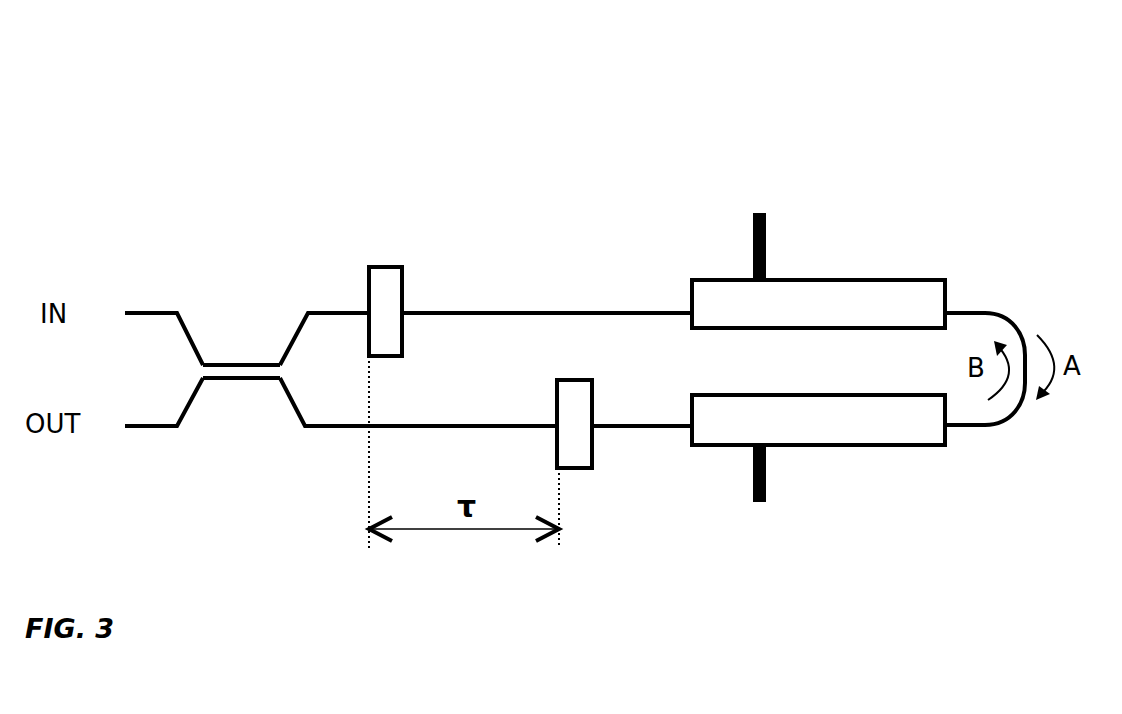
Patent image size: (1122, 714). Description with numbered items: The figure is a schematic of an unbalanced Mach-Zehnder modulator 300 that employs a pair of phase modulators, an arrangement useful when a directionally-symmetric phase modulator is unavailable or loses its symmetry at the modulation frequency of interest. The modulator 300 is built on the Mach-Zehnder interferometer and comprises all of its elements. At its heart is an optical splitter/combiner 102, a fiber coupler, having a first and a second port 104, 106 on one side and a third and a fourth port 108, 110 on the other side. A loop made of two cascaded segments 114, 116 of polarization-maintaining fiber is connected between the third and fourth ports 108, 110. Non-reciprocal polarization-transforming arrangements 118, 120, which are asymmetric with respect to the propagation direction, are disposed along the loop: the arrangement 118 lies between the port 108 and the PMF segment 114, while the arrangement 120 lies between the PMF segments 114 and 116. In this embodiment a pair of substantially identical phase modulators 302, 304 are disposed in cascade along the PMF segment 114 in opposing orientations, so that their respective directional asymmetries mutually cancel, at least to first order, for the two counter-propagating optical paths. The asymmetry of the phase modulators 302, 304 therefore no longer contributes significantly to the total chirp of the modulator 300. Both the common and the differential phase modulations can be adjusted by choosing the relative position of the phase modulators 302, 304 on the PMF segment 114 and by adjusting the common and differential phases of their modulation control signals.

The unbalanced Mach-Zehnder modulator 300 is at (514, 137).
The optical splitter/combiner 102 is at (227, 363).
The first port 104 is at (178, 308).
The second port 106 is at (182, 430).
The third port 108 is at (308, 312).
The fourth port 110 is at (305, 430).
The PMF segment 114 is at (545, 313).
The PMF segment 116 is at (432, 426).
The non-reciprocal polarization-transforming arrangement 118 is at (382, 267).
The non-reciprocal polarization-transforming arrangement 120 is at (592, 460).
The phase modulator 302 is at (882, 280).
The phase modulator 304 is at (873, 445).